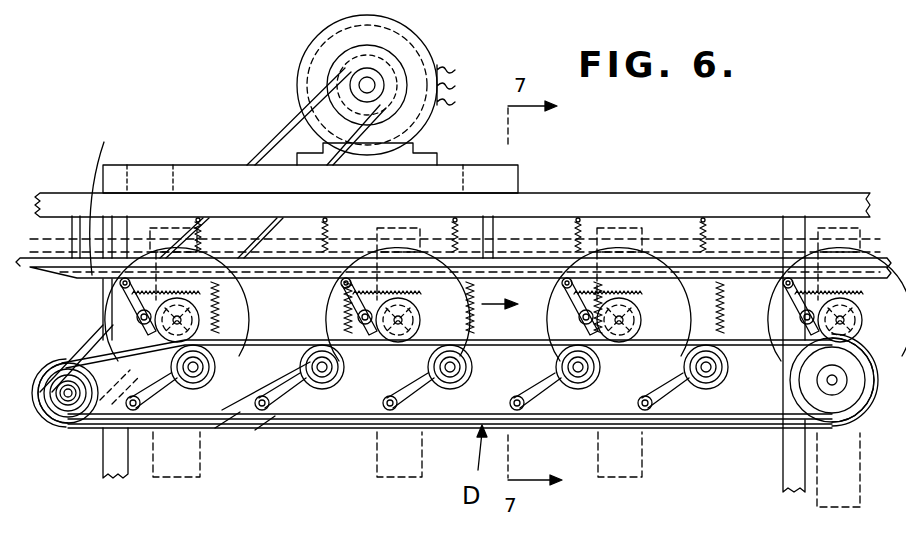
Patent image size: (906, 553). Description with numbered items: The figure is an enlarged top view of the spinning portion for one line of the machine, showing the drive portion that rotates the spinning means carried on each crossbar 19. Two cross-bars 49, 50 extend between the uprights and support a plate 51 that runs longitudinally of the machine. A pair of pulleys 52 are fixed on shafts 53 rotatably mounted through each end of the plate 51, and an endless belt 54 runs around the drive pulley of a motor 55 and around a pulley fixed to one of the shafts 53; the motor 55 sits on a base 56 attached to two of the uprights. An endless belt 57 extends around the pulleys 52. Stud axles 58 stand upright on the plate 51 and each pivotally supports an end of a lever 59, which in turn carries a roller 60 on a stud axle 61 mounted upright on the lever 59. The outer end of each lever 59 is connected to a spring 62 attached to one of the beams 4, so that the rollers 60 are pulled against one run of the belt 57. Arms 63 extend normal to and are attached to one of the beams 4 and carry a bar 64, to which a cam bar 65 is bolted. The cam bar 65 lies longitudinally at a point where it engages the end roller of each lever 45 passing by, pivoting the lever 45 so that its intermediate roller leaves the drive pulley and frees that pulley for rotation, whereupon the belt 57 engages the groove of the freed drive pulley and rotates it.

The beam 4 is at (735, 198).
The crossbar 19 is at (200, 477).
The lever 45 is at (118, 297).
The cross-bar 49 is at (110, 458).
The cross-bar 50 is at (790, 470).
The plate 51 is at (752, 400).
The pulley 52 is at (50, 408).
The shaft 53 is at (62, 367).
The endless belt 54 is at (282, 140).
The motor 55 is at (304, 61).
The base 56 is at (522, 173).
The endless belt 57 is at (218, 430).
The stud axle 58 is at (270, 430).
The lever 59 is at (172, 398).
The roller 60 is at (216, 368).
The stud axle 61 is at (314, 386).
The spring 62 is at (212, 318).
The arm 63 is at (73, 232).
The bar 64 is at (55, 257).
The cam bar 65 is at (100, 195).